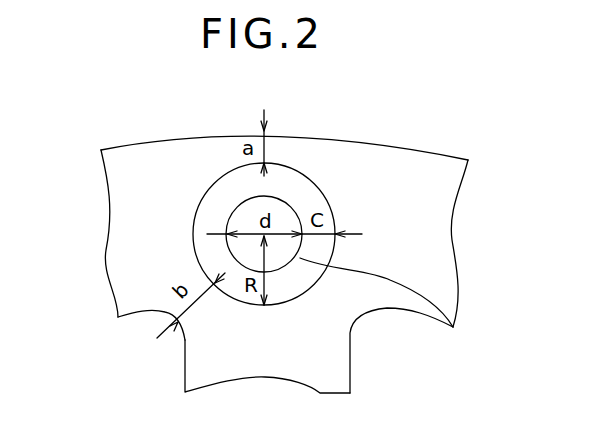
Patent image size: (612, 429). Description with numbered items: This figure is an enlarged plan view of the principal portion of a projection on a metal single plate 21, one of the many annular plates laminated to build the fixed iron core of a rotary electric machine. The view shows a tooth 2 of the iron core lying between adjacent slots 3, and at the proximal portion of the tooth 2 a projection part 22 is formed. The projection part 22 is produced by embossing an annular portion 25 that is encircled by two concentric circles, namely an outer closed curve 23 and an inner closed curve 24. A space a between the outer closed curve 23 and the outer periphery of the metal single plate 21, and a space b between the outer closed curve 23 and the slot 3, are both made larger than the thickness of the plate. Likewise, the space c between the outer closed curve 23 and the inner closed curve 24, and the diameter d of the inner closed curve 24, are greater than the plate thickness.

The iron core tooth 2 is at (207, 360).
The slot 3 is at (157, 327).
The metal single plate 21 is at (398, 158).
The projection part 22 is at (304, 168).
The outer closed curve 23 is at (333, 210).
The inner closed curve 24 is at (453, 327).
The annular portion 25 is at (298, 283).